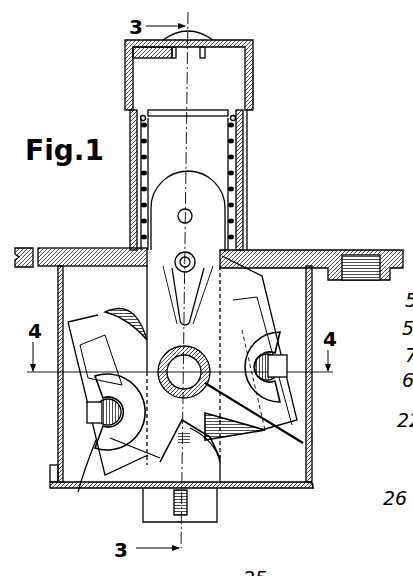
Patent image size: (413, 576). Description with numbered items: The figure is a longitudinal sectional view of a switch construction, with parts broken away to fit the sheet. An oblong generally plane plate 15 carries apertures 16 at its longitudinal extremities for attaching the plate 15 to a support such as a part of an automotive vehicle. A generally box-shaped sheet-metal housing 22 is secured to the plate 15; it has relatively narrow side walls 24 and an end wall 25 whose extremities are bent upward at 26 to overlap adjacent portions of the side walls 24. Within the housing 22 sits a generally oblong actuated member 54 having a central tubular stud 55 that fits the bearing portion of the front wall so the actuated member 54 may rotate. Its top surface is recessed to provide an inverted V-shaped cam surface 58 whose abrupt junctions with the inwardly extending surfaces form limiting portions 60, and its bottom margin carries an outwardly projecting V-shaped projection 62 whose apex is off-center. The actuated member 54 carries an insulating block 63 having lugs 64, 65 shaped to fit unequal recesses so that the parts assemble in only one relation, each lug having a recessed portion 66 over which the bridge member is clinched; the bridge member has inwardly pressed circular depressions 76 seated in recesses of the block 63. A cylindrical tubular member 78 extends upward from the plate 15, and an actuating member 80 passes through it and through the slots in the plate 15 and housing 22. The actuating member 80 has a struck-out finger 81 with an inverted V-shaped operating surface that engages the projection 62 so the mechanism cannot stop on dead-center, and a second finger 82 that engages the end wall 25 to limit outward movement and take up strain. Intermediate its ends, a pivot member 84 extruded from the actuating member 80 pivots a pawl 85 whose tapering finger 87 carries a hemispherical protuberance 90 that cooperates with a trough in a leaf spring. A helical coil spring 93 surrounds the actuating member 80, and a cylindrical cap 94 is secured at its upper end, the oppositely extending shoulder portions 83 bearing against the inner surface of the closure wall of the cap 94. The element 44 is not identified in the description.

The plate 15 is at (318, 252).
The apertures 16 is at (373, 262).
The housing 22 is at (313, 417).
The side walls 24 is at (313, 438).
The end wall 25 is at (260, 490).
The upwardly bent extremities 26 is at (313, 487).
The cam surface 44 is at (112, 305).
The actuated member 54 is at (270, 309).
The tubular stud 55 is at (303, 445).
The cam surface 58 is at (150, 355).
The limiting portions 60 is at (86, 378).
The V-shaped projection 62 is at (248, 442).
The block 63 is at (266, 290).
The lug 64 is at (78, 492).
The lug 65 is at (280, 388).
The recessed portion 66 is at (55, 478).
The depressions 76 is at (92, 410).
The tubular member 78 is at (146, 114).
The actuating member 80 is at (130, 178).
The finger 81 is at (214, 460).
The second finger 82 is at (188, 512).
The shoulder portions 83 is at (126, 60).
The pivot member 84 is at (192, 215).
The pawl 85 is at (165, 228).
The tapering finger 87 is at (183, 291).
The hemispherical protuberance 90 is at (195, 255).
The helical coil spring 93 is at (229, 156).
The cap 94 is at (254, 93).